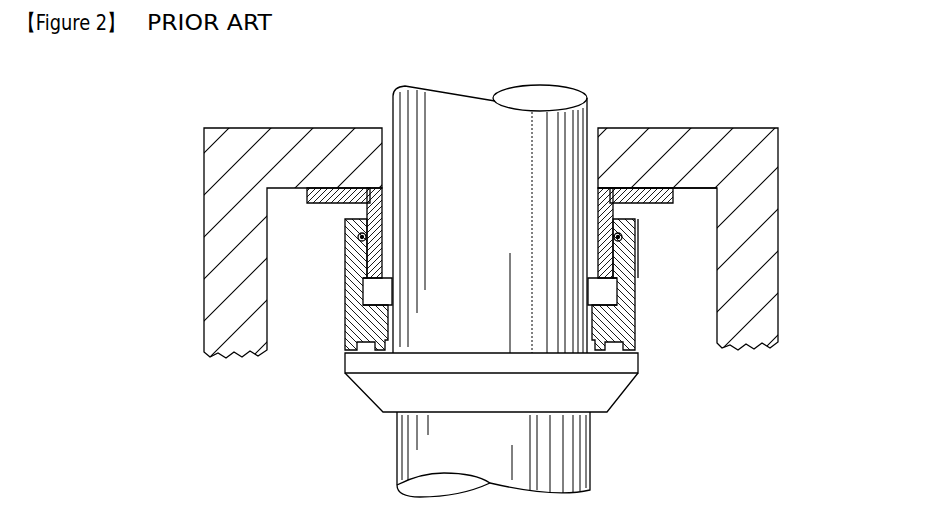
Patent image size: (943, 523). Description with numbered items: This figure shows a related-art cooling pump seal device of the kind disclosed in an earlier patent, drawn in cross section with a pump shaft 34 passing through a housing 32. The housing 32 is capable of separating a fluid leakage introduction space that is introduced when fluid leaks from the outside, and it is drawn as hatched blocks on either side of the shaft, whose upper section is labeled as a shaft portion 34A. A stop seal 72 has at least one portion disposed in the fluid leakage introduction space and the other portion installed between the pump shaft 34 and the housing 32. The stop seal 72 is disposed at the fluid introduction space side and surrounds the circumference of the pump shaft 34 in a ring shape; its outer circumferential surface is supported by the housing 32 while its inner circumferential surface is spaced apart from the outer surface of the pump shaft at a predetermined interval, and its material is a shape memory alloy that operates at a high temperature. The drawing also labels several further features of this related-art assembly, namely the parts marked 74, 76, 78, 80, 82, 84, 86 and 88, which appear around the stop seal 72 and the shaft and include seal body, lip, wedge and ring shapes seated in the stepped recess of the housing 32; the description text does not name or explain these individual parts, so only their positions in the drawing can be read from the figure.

The housing 32 is at (770, 332).
The pump shaft 34 is at (590, 462).
The shaft sleeve 34A is at (515, 188).
The stop seal 72 is at (620, 260).
The gap 74 is at (655, 237).
The step surface 76 is at (675, 208).
The collar 78 is at (613, 400).
The seal body 80 is at (640, 317).
The lip seal 82 is at (367, 257).
The wedge seal 84 is at (360, 233).
The wedge seal 86 is at (648, 190).
The O-ring 88 is at (372, 237).